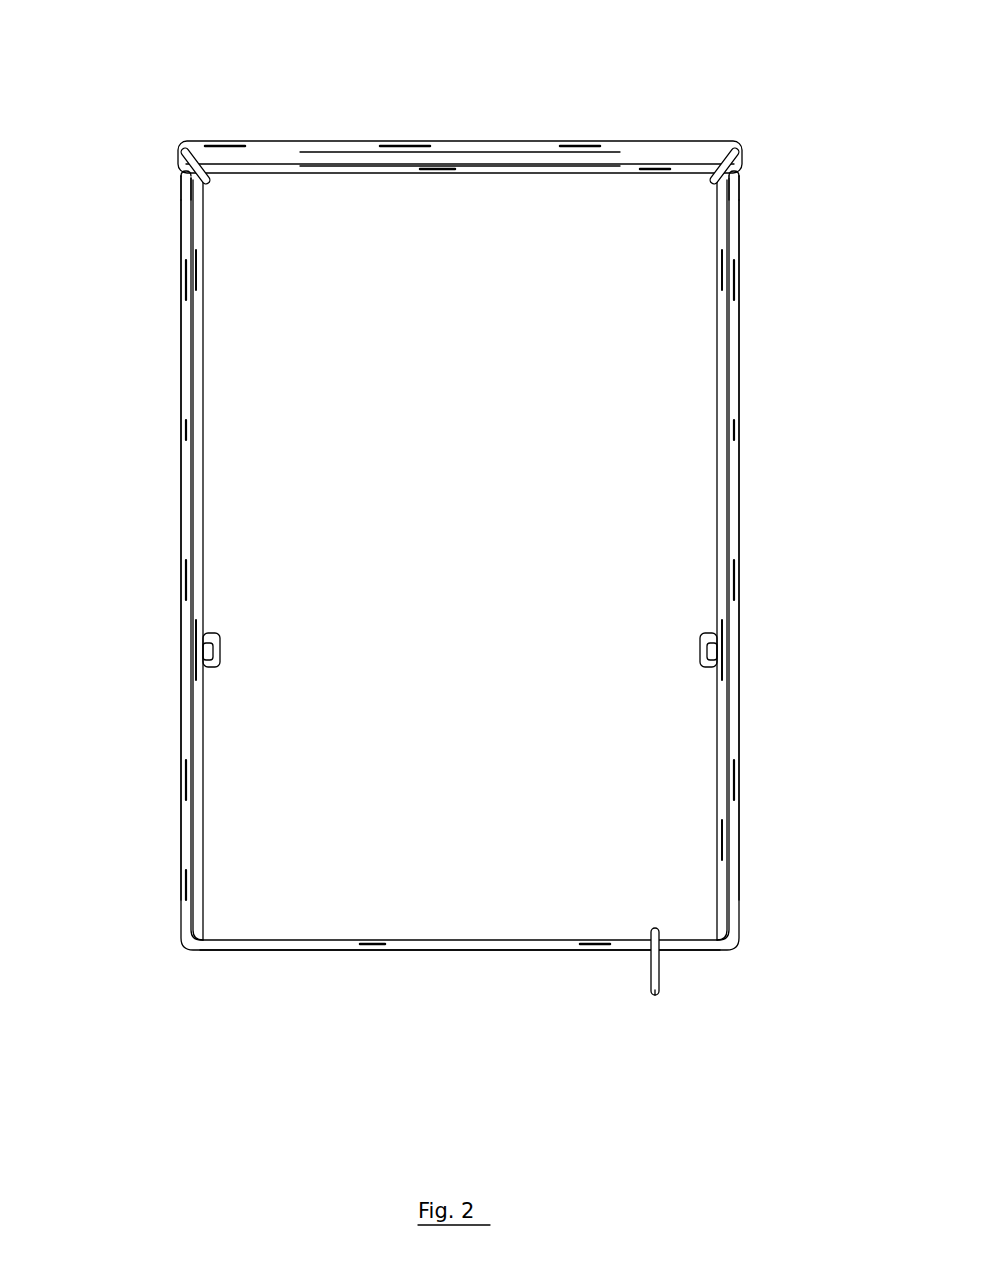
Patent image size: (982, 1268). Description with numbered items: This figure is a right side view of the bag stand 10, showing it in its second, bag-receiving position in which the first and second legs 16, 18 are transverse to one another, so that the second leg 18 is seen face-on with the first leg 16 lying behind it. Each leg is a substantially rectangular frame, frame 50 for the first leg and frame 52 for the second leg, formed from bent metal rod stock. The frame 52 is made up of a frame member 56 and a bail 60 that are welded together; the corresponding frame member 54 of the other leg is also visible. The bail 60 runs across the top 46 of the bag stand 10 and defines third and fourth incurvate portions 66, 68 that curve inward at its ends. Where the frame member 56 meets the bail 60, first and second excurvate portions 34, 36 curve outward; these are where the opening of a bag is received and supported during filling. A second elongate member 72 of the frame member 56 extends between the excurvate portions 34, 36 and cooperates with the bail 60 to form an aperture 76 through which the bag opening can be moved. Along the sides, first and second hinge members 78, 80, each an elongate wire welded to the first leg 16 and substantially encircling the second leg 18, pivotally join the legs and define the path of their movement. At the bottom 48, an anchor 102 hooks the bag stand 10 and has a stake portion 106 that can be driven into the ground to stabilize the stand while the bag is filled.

The bag stand 10 is at (835, 119).
The first leg 16 is at (166, 350).
The second leg 18 is at (212, 290).
The first excurvate portion 34 is at (174, 164).
The second excurvate portion 36 is at (748, 164).
The top 46 is at (407, 72).
The bottom 48 is at (338, 1002).
The substantially rectangular frame 50 is at (776, 545).
The substantially rectangular frame 52 is at (118, 913).
The frame member 54 is at (184, 457).
The frame member 56 is at (200, 470).
The bail 60 is at (565, 141).
The third incurvate portion 66 is at (178, 147).
The fourth incurvate portion 68 is at (742, 145).
The second elongate member 72 is at (481, 170).
The aperture 76 is at (490, 149).
The first hinge member 78 is at (260, 641).
The second hinge member 80 is at (656, 662).
The anchor 102 is at (684, 1000).
The stake portion 106 is at (656, 958).